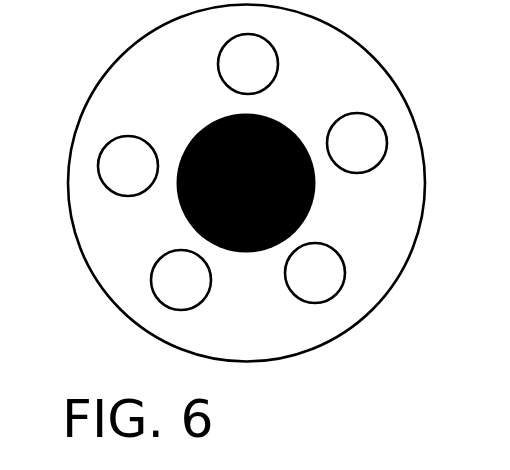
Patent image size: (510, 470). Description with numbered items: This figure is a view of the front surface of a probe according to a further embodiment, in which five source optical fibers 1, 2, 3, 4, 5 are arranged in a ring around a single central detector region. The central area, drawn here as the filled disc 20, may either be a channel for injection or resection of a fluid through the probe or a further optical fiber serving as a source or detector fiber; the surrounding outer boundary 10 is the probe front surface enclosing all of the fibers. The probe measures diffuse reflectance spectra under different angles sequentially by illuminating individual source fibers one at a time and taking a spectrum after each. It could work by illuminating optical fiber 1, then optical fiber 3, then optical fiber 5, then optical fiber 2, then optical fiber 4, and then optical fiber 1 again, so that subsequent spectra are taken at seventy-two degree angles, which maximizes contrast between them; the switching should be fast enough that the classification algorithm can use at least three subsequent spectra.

The housing outer circle 10 is at (98, 293).
The central aperture 20 is at (286, 120).
The optical fiber 1 is at (248, 64).
The optical fiber 2 is at (357, 143).
The optical fiber 3 is at (315, 273).
The optical fiber 4 is at (181, 280).
The optical fiber 5 is at (128, 166).